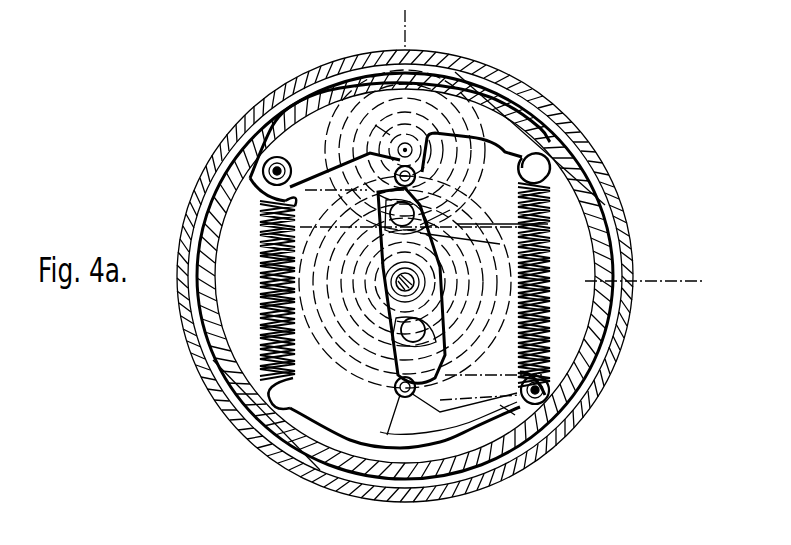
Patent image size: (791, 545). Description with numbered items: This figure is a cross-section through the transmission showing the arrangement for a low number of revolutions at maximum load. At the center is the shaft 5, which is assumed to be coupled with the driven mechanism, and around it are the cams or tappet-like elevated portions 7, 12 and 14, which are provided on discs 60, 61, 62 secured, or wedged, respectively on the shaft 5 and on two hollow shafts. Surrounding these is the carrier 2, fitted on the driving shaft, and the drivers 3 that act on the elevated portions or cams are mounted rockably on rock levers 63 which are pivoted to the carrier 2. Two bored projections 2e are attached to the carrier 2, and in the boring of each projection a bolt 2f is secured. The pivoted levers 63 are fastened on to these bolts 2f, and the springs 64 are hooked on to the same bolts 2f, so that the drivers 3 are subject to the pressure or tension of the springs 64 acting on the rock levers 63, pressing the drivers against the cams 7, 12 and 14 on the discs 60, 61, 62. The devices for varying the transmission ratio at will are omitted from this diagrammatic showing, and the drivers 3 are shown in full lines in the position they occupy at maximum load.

The carrier 2 is at (328, 100).
The bored projections 2e is at (282, 158).
The bolt 2f is at (252, 172).
The drivers 3 is at (415, 172).
The shaft 5 is at (357, 294).
The cam or tappet-like elevated portion 7 is at (390, 250).
The cam or tappet-like elevated portion 12 is at (378, 232).
The cam or tappet-like elevated portion 14 is at (378, 214).
The disc 60 is at (500, 244).
The disc 61 is at (548, 224).
The disc 62 is at (450, 210).
The rock levers 63 is at (380, 133).
The springs 64 is at (260, 208).